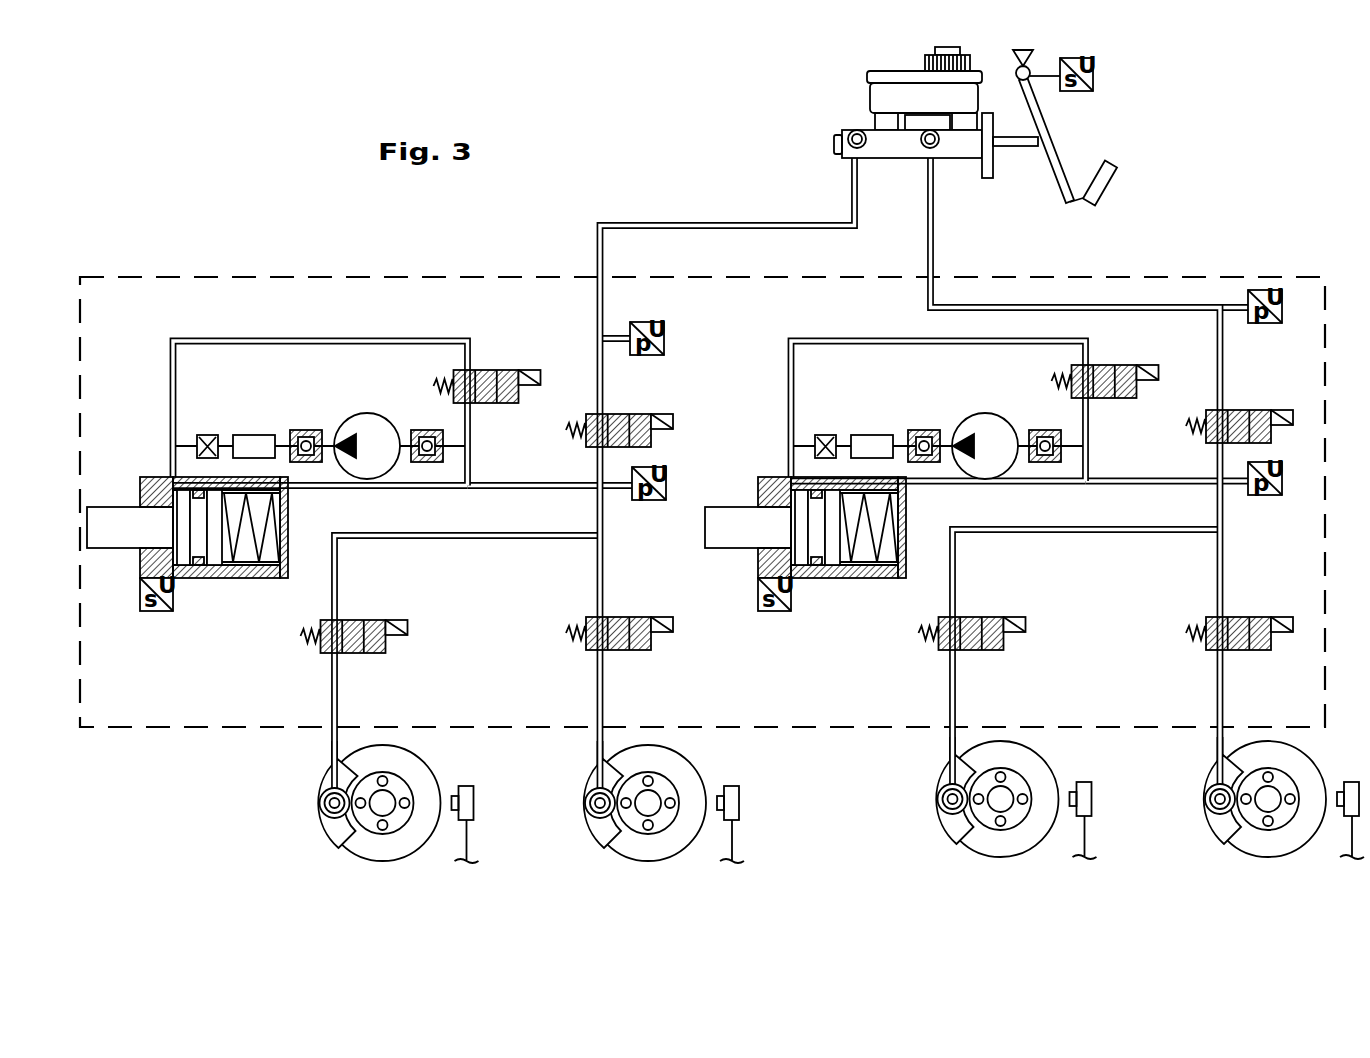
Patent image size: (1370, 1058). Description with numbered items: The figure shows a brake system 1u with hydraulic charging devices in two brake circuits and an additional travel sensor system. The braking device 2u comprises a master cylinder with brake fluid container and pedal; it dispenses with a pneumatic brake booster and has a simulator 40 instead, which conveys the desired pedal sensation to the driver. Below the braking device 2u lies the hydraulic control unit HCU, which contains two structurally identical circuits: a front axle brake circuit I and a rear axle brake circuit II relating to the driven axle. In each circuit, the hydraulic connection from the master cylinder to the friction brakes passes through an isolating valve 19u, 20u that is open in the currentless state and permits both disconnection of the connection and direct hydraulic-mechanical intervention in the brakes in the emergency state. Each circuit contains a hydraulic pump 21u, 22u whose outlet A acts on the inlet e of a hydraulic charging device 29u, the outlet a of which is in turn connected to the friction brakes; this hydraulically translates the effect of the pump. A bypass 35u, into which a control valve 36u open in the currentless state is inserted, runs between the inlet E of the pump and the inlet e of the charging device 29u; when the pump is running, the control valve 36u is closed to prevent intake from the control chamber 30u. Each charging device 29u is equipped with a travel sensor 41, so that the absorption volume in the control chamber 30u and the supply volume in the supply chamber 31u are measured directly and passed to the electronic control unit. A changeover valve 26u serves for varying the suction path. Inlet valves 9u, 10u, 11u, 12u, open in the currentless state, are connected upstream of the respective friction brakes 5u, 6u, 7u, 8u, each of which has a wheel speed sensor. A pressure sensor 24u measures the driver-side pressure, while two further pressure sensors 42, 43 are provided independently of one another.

The brake system 1u is at (186, 226).
The braking device 2u is at (862, 88).
The simulator 40 is at (897, 158).
The hydraulic control unit HCU is at (1279, 277).
The hydraulic friction brake 5u is at (342, 827).
The hydraulic friction brake 6u is at (607, 823).
The hydraulic friction brake 7u is at (960, 818).
The hydraulic friction brake 8u is at (1228, 818).
The inlet valve 9u is at (358, 652).
The inlet valve 10u is at (628, 649).
The inlet valve 11u is at (976, 650).
The inlet valve 12u is at (1244, 649).
The isolating valve 19u is at (651, 440).
The changeover valve 26u is at (1213, 410).
The isolating valve 20u is at (1136, 392).
The control valve 36u is at (492, 368).
The hydraulic pump 21u is at (362, 430).
The hydraulic pump 22u is at (978, 430).
The pressure sensor 24u is at (1266, 325).
The pressure sensor 42 is at (663, 338).
The pressure sensor 43 is at (1266, 497).
The hydraulic charging device 29u is at (496, 558).
The control chamber 30u is at (152, 478).
The supply chamber 31u is at (258, 562).
The bypass 35u is at (472, 467).
The travel sensor 41 is at (150, 613).
The outlet of the hydraulic pump A is at (334, 443).
The inlet of the hydraulic pump E is at (394, 430).
The inlet of the charging device e is at (172, 477).
The outlet of the charging device a is at (292, 488).
The brake circuit I is at (920, 741).
The brake circuit II is at (300, 745).